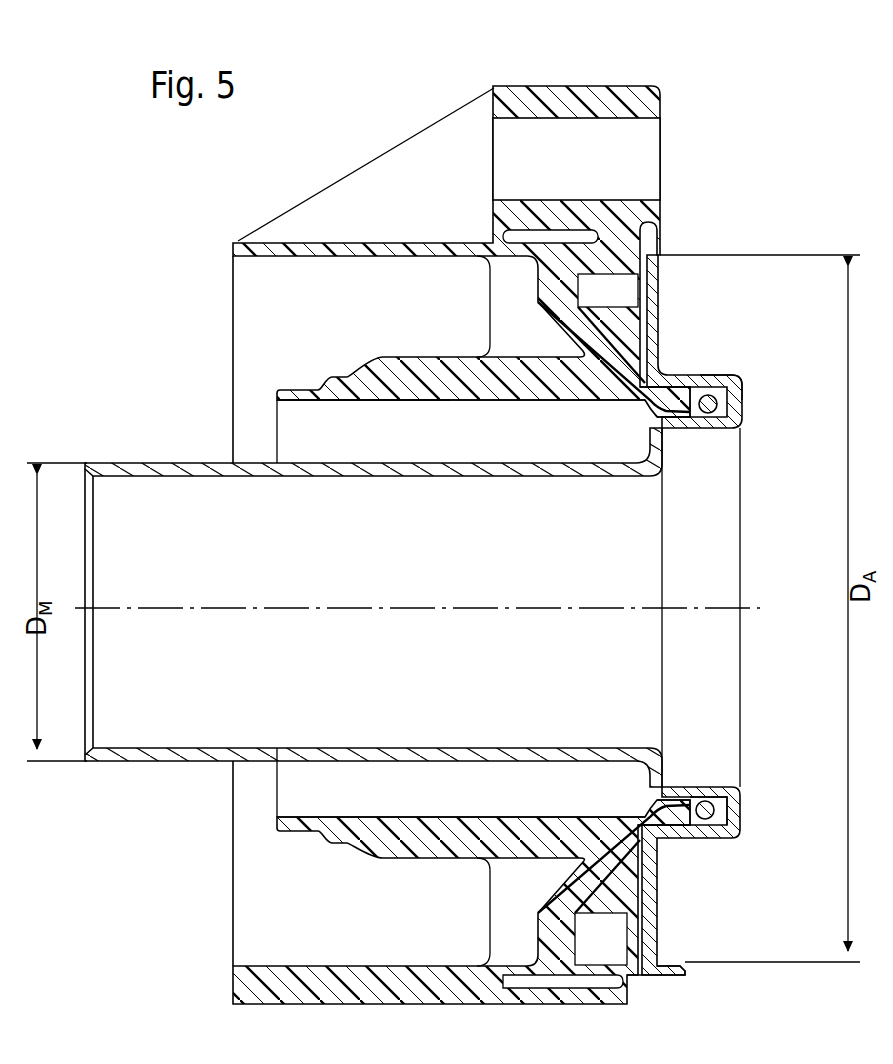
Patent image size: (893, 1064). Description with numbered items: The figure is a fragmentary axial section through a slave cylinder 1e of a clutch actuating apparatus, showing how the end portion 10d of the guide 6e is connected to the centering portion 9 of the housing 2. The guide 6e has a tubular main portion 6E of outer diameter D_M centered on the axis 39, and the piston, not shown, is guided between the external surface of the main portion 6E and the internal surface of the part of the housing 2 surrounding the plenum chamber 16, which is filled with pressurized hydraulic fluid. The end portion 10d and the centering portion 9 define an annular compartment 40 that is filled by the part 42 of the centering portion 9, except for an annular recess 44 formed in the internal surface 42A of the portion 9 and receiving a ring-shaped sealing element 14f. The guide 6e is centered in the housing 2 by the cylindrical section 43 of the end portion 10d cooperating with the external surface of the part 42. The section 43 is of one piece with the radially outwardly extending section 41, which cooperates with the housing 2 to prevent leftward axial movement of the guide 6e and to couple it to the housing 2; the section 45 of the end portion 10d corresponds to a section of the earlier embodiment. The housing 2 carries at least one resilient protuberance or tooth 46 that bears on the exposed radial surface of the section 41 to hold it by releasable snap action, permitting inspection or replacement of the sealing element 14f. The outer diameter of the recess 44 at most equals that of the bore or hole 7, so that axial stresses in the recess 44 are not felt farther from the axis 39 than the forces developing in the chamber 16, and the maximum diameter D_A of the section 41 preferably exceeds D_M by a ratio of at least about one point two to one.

The slave cylinder 1e is at (205, 373).
The housing 2 is at (617, 80).
The plenum chamber 16 is at (440, 440).
The bore or hole 7 is at (365, 403).
The centering portion 9 is at (668, 818).
The main portion 6E is at (373, 607).
The guide 6e is at (217, 472).
The end portion 10d is at (678, 446).
The radially outwardly extending section 41 is at (653, 280).
The part 42 is at (682, 394).
The cylindrical section 43 is at (712, 381).
The annular compartment 40 is at (728, 404).
The section 45 is at (690, 786).
The resilient protuberance or tooth 46 is at (678, 961).
The annular recess 44 is at (729, 803).
The sealing element 14f is at (712, 800).
The internal surface 42A is at (677, 812).
The axis 39 is at (528, 606).